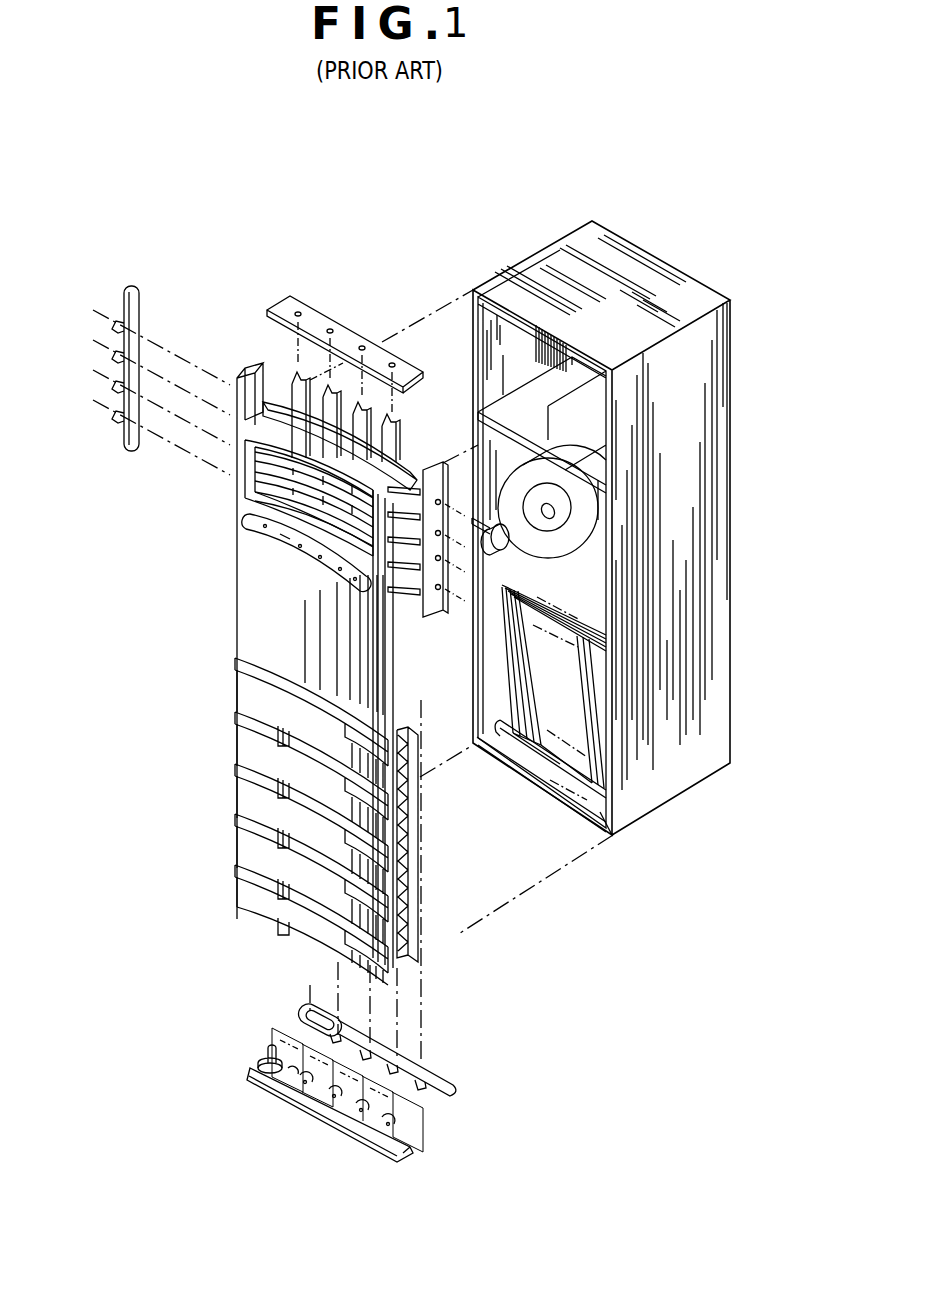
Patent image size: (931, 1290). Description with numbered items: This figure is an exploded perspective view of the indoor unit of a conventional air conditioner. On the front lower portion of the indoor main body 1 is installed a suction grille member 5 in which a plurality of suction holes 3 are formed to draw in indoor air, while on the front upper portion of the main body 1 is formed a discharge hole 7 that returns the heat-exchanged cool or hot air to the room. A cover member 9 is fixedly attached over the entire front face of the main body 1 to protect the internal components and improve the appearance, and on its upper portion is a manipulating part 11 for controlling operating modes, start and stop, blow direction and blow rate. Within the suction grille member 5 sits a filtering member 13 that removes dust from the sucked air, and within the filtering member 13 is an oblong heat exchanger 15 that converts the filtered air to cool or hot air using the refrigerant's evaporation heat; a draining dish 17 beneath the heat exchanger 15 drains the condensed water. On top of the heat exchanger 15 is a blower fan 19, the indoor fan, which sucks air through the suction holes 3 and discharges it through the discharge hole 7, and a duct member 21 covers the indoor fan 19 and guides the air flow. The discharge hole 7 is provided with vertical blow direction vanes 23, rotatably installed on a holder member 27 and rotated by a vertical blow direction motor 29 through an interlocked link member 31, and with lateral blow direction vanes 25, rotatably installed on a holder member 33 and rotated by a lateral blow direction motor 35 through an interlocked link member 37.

The indoor main body 1 is at (712, 653).
The suction holes 3 is at (297, 790).
The suction grille member 5 is at (248, 695).
The discharge hole 7 is at (497, 345).
The cover member 9 is at (250, 615).
The manipulating part 11 is at (245, 522).
The filtering member 13 is at (403, 925).
The heat exchanger 15 is at (572, 710).
The draining dish 17 is at (613, 835).
The blower fan 19 is at (553, 511).
The duct member 21 is at (598, 523).
The vertical blow direction vanes 23 is at (283, 422).
The lateral blow direction vanes 25 is at (337, 403).
The holder member 27 is at (440, 463).
The vertical blow direction motor 29 is at (497, 548).
The link member 31 is at (130, 330).
The holder member 33 is at (303, 1100).
The lateral blow direction motor 35 is at (265, 1085).
The link member 37 is at (438, 1075).